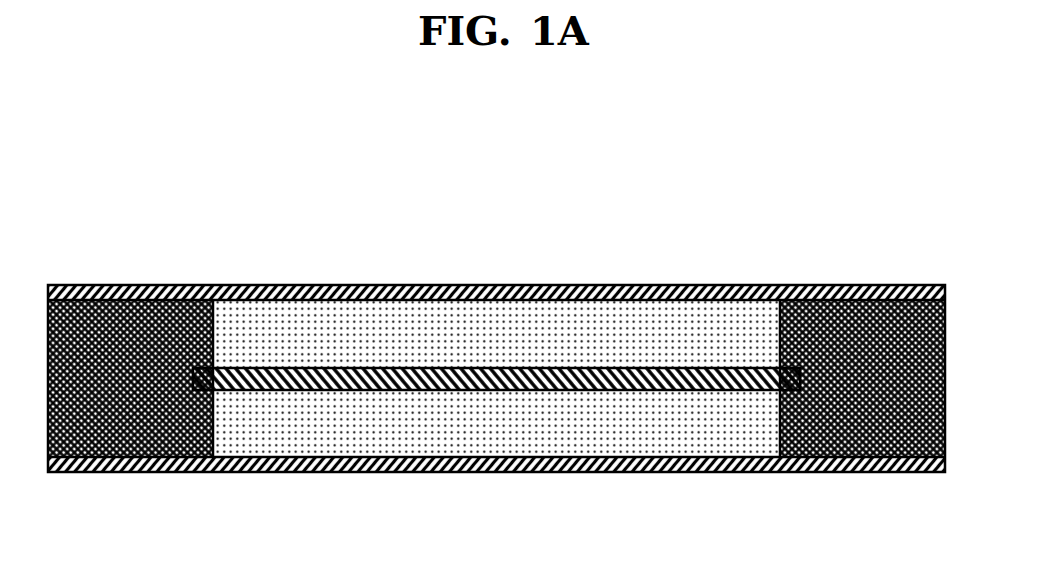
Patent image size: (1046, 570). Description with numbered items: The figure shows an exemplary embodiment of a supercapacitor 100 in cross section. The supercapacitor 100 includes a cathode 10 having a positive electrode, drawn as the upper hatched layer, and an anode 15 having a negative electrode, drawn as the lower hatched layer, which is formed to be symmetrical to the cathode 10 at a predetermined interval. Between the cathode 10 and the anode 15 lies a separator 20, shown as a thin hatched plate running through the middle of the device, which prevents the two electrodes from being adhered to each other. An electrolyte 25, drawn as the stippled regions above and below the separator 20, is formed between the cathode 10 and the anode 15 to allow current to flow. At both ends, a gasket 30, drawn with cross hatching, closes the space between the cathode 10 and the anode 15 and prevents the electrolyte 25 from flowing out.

The supercapacitor 100 is at (496, 361).
The cathode 10 is at (722, 300).
The anode 15 is at (496, 463).
The separator 20 is at (507, 378).
The electrolyte 25 is at (308, 335).
The gasket 30 is at (130, 330).